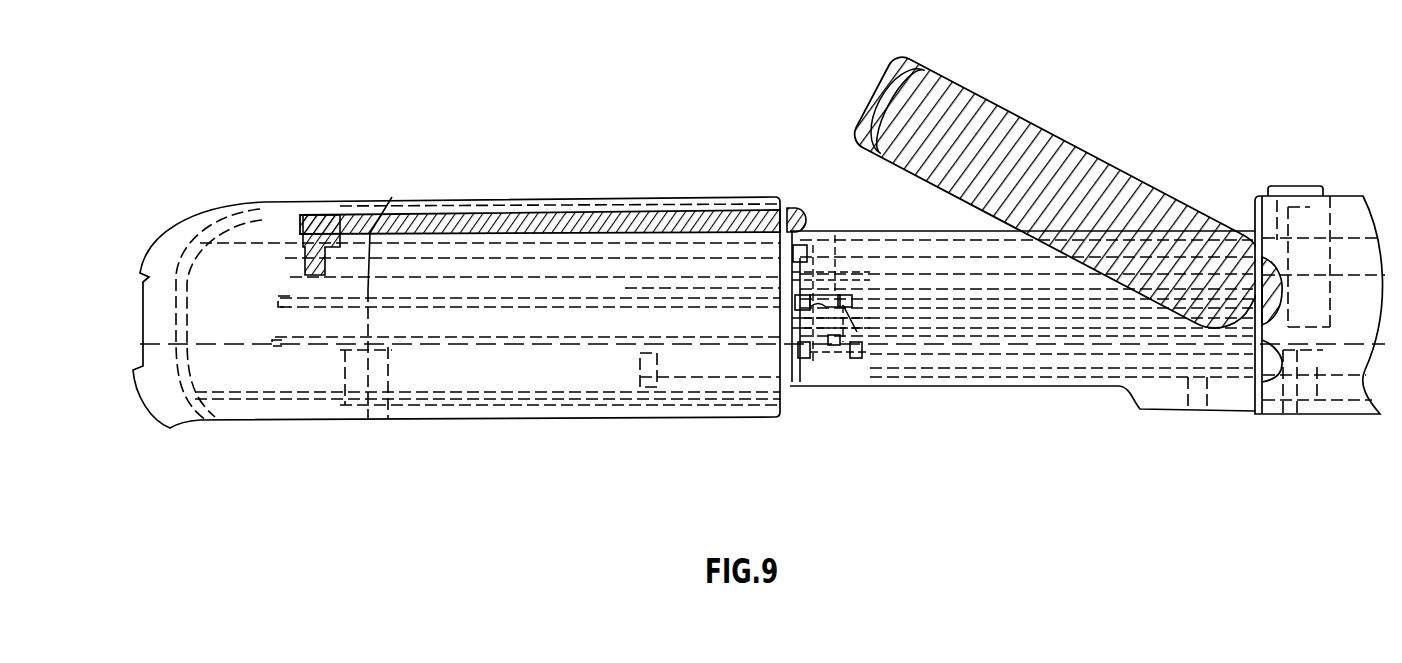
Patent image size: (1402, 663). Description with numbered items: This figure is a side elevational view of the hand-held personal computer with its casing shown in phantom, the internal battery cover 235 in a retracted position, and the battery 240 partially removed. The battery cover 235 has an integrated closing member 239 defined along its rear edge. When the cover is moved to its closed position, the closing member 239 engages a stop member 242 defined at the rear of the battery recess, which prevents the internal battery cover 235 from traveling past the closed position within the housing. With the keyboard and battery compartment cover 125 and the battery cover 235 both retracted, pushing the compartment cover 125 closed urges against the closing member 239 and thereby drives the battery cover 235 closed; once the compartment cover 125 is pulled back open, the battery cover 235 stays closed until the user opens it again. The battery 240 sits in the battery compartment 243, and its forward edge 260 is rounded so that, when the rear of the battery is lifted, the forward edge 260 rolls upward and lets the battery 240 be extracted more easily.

The keyboard and battery compartment cover 125 is at (243, 372).
The internal battery cover 235 is at (688, 228).
The battery cover closing member 239 is at (310, 262).
The battery 240 is at (1032, 167).
The stop member 242 is at (780, 237).
The battery compartment 243 is at (953, 313).
The forward edge of the battery 260 is at (1267, 343).